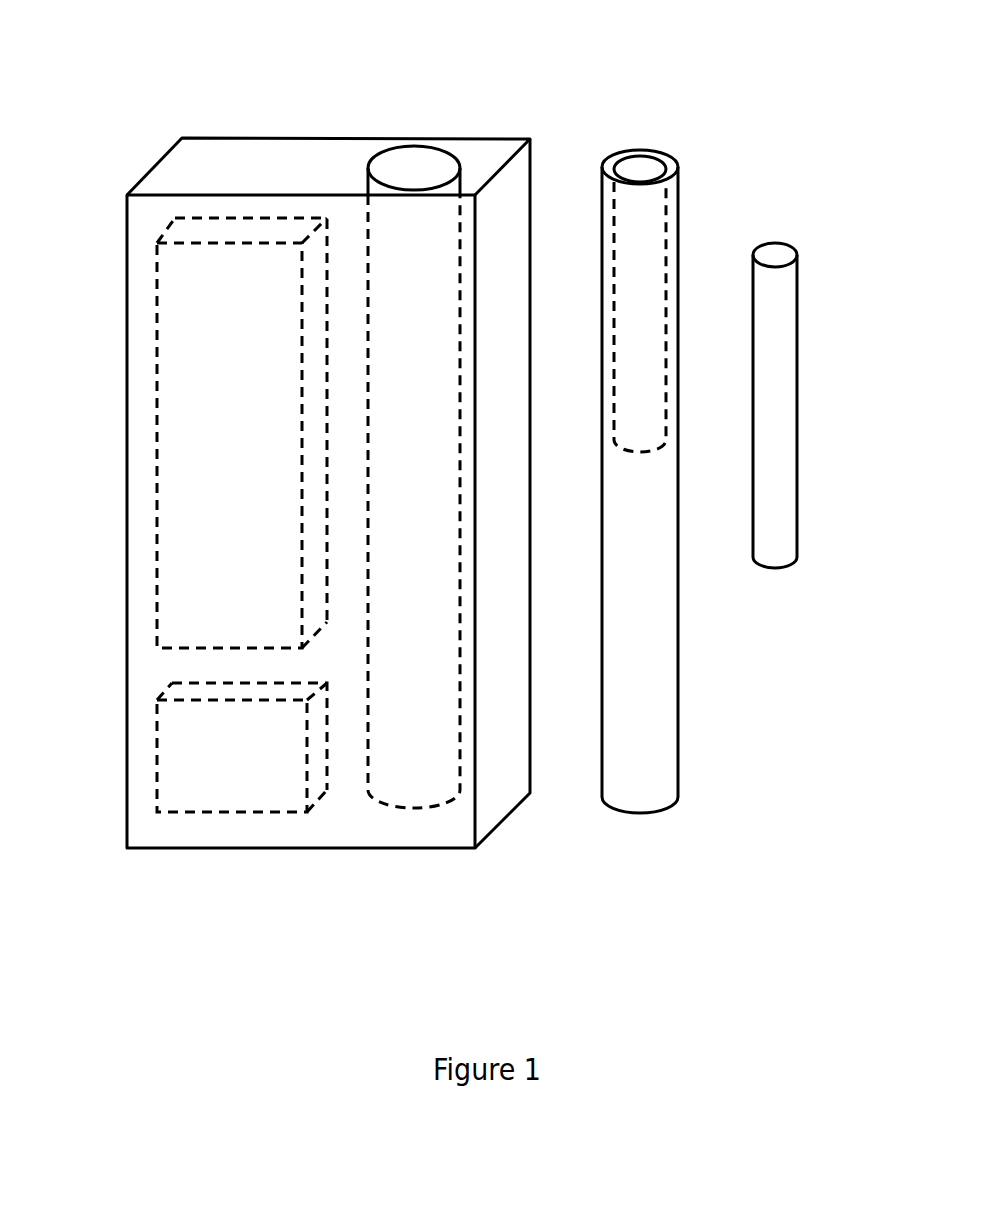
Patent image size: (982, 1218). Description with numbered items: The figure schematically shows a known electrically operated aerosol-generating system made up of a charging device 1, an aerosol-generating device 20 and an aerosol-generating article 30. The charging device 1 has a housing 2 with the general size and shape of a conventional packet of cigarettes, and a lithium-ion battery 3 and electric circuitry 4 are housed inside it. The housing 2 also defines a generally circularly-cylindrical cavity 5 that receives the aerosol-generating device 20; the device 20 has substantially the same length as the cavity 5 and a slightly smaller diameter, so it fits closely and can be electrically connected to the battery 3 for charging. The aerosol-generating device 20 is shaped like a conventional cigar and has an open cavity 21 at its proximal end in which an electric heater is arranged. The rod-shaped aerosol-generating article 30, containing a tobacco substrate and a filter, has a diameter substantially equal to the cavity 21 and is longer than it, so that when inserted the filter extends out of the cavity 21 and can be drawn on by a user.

The charging device 1 is at (299, 510).
The housing 2 is at (145, 240).
The lithium-ion battery 3 is at (212, 477).
The electric circuitry 4 is at (208, 748).
The cavity 5 is at (413, 172).
The aerosol-generating device 20 is at (640, 513).
The open cavity 21 is at (641, 170).
The aerosol-generating article 30 is at (780, 672).